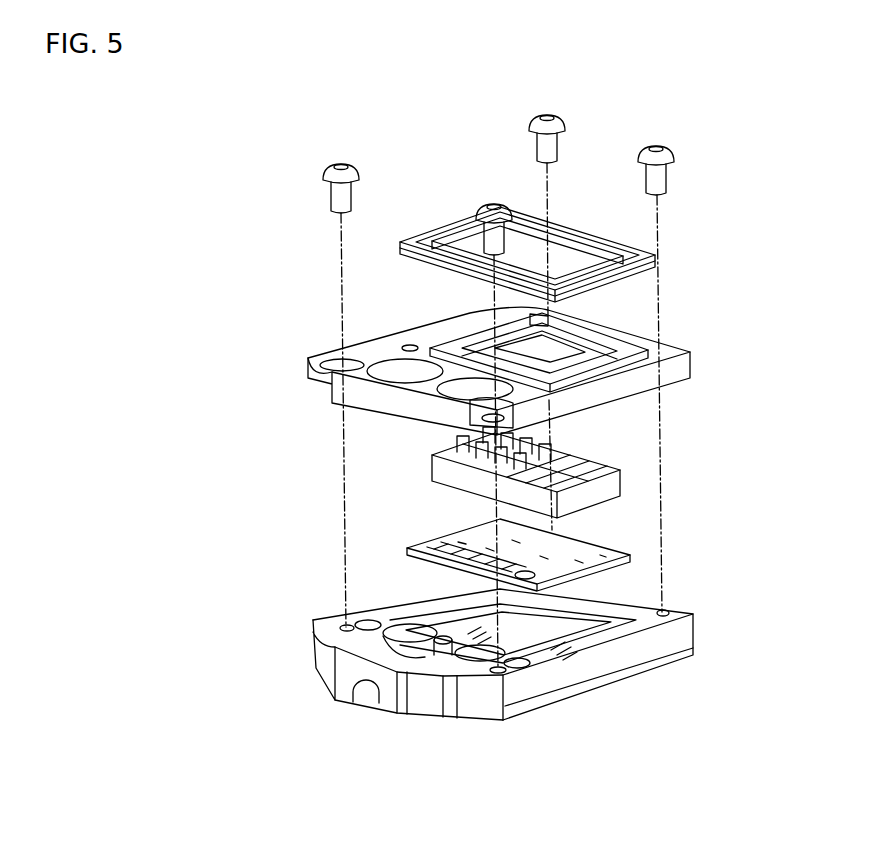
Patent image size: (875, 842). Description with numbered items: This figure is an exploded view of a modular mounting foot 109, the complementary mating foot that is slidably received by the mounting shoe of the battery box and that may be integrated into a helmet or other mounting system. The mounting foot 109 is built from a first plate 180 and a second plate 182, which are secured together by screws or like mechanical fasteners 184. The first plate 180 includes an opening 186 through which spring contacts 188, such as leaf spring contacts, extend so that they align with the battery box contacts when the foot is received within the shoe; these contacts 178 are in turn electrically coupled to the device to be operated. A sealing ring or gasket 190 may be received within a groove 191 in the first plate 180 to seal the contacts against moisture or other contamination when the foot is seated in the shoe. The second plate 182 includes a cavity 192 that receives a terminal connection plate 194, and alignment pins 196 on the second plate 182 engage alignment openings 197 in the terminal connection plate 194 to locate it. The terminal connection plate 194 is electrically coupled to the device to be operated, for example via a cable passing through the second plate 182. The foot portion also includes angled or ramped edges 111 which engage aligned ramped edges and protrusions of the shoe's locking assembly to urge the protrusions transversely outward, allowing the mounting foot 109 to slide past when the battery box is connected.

The mounting foot 109 is at (174, 343).
The ramped edges 111 is at (517, 314).
The contacts 178 is at (445, 470).
The first plate 180 is at (690, 371).
The second plate 182 is at (688, 640).
The mechanical fasteners 184 is at (352, 166).
The opening 186 is at (533, 372).
The spring contacts 188 is at (605, 467).
The sealing ring or gasket 190 is at (652, 255).
The groove 191 is at (418, 351).
The cavity 192 is at (587, 638).
The terminal connection plate 194 is at (628, 559).
The alignment pins 196 is at (445, 643).
The alignment openings 197 is at (433, 552).